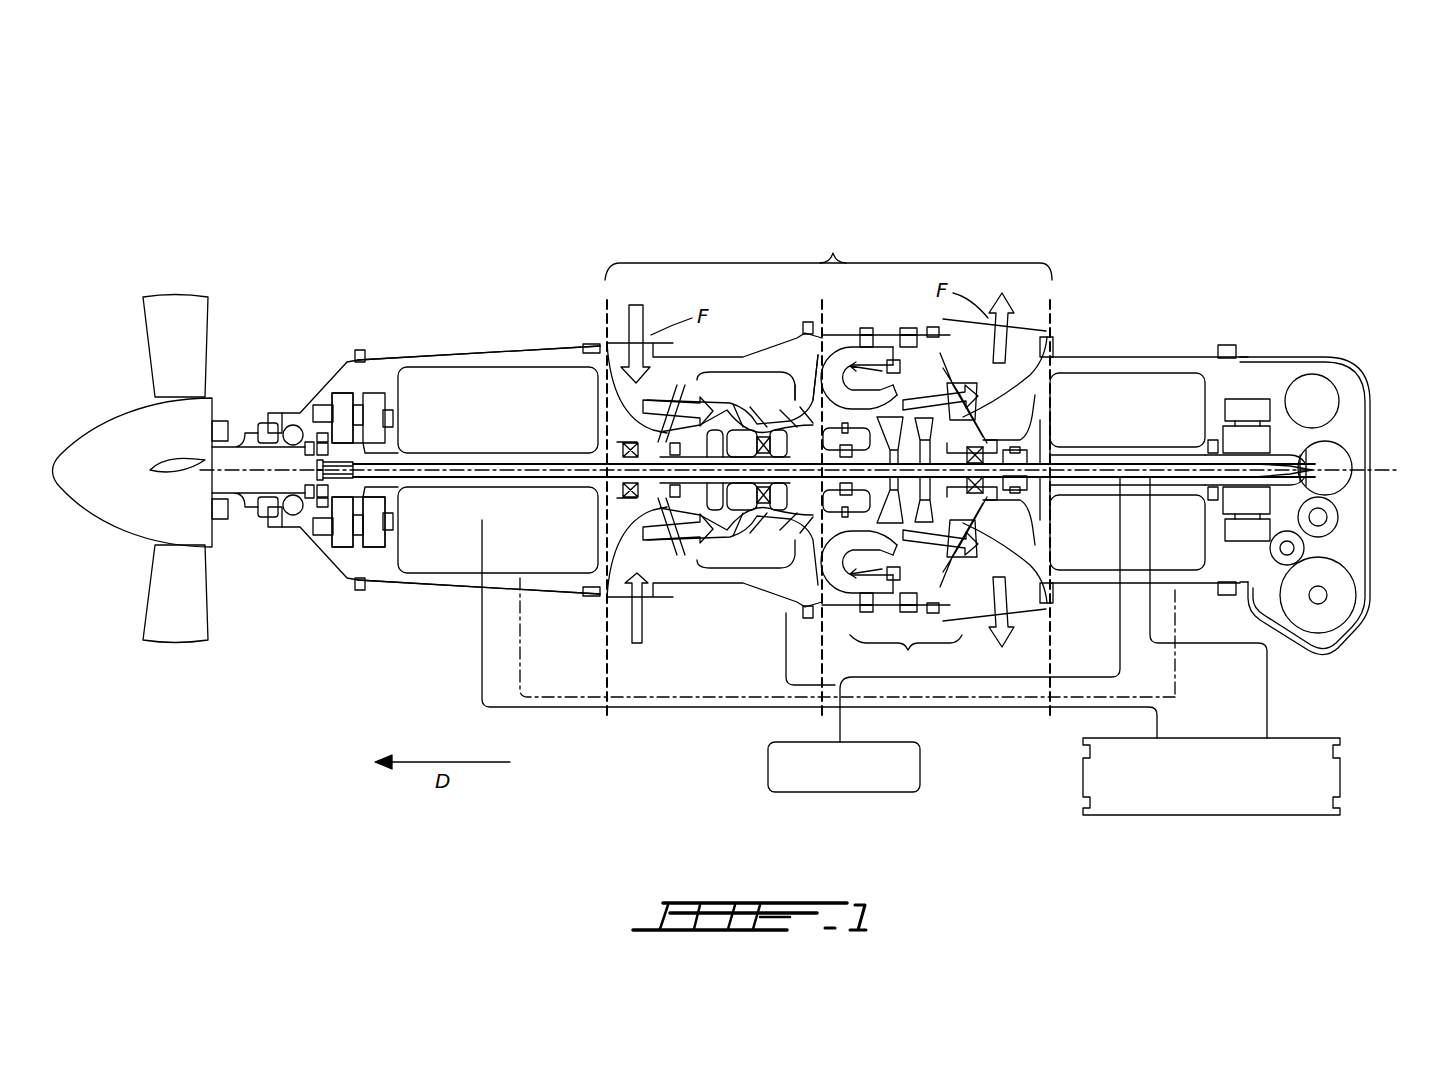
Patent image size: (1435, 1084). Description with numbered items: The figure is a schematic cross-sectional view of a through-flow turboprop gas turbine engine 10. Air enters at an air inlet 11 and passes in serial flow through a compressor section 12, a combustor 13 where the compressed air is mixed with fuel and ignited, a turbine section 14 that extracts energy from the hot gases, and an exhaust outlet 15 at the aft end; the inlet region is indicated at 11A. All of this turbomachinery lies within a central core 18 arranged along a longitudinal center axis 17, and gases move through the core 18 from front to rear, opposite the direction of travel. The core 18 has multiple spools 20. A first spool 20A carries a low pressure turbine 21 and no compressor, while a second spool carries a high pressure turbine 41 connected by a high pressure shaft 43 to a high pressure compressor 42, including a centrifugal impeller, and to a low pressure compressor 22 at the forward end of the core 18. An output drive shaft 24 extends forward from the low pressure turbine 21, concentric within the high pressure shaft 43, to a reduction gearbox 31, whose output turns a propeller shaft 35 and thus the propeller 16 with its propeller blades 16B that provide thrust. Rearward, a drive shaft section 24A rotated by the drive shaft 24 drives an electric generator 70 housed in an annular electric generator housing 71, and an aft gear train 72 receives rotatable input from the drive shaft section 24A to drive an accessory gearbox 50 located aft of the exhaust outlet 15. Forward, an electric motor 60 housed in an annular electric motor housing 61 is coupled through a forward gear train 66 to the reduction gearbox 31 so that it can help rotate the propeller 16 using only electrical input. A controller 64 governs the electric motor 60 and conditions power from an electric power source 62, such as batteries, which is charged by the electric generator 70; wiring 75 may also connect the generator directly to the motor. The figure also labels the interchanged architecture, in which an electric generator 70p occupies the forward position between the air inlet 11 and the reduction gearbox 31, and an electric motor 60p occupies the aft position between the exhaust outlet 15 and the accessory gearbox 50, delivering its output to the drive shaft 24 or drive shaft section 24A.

The gas turbine engine 10 is at (498, 203).
The air inlet 11 is at (656, 323).
The engine inlet 11A is at (622, 345).
The compressor section 12 is at (740, 363).
The combustor 13 is at (848, 335).
The turbine section 14 is at (908, 650).
The exhaust outlet 15 is at (1025, 325).
The propeller 16 is at (133, 486).
The propeller blades 16B is at (178, 312).
The longitudinal center axis 17 is at (1345, 470).
The central core 18 is at (828, 250).
The spools 20 is at (741, 510).
The first spool 20A is at (982, 545).
The low pressure turbine 21 is at (1034, 555).
The low pressure compressor 22 is at (714, 535).
The output drive shaft 24 is at (447, 482).
The drive shaft section 24A is at (1042, 440).
The reduction gearbox 31 is at (327, 385).
The propeller shaft 35 is at (249, 486).
The high pressure turbine 41 is at (881, 437).
The high pressure compressor 42 is at (794, 395).
The high pressure shaft 43 is at (692, 537).
The accessory gearbox 50 is at (1298, 598).
The electric motor 60 is at (510, 386).
The electric motor 60p is at (1135, 370).
The electric motor housing 61 is at (428, 356).
The electric power source 62 is at (1233, 816).
The controller 64 is at (838, 794).
The forward gear train 66 is at (375, 537).
The electric generator 70 is at (1108, 403).
The electric generator 70p is at (536, 360).
The electric generator housing 71 is at (1168, 372).
The aft gear train 72 is at (1245, 400).
The wiring 75 is at (1178, 690).